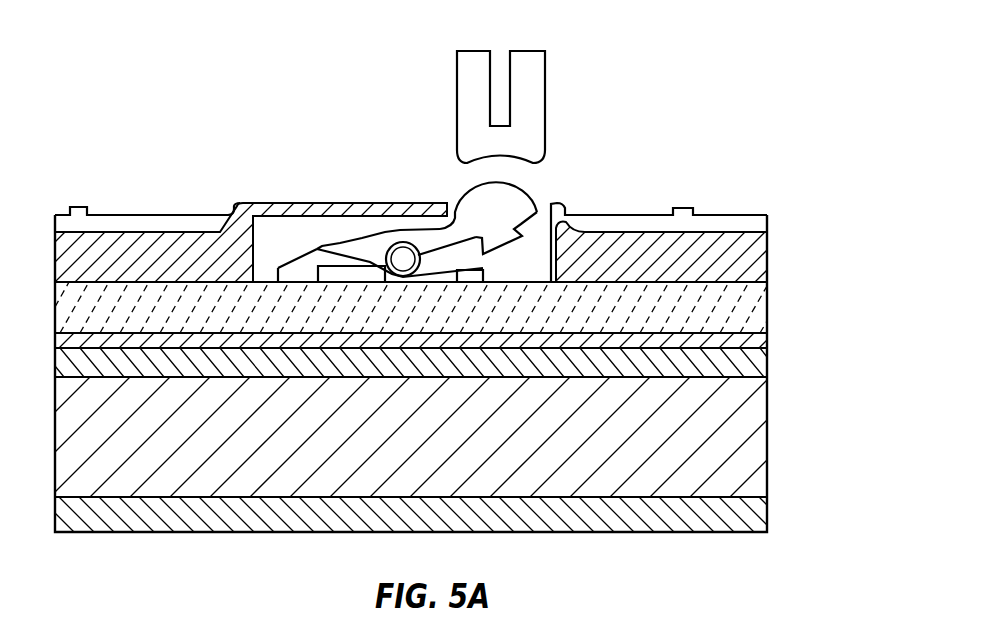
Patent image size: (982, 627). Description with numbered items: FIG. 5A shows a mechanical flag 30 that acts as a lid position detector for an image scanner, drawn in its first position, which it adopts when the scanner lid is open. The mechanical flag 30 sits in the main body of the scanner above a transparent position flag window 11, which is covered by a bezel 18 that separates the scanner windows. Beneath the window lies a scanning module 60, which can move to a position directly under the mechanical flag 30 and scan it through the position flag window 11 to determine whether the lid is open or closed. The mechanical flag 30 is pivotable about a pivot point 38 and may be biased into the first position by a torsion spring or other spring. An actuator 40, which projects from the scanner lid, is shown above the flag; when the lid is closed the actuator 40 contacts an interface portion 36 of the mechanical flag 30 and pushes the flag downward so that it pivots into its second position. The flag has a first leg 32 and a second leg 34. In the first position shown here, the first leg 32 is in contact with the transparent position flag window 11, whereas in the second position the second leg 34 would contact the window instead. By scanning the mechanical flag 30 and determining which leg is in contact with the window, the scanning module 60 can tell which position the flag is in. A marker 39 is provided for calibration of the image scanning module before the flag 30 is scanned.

The actuator 40 is at (538, 72).
The interface portion 36 is at (470, 192).
The first leg 32 is at (301, 276).
The mechanical flag 30 is at (418, 238).
The second leg 34 is at (500, 242).
The pivot point 38 is at (403, 265).
The marker 39 is at (470, 272).
The bezel 18 is at (762, 262).
The position flag window 11 is at (762, 311).
The scanning module 60 is at (762, 444).